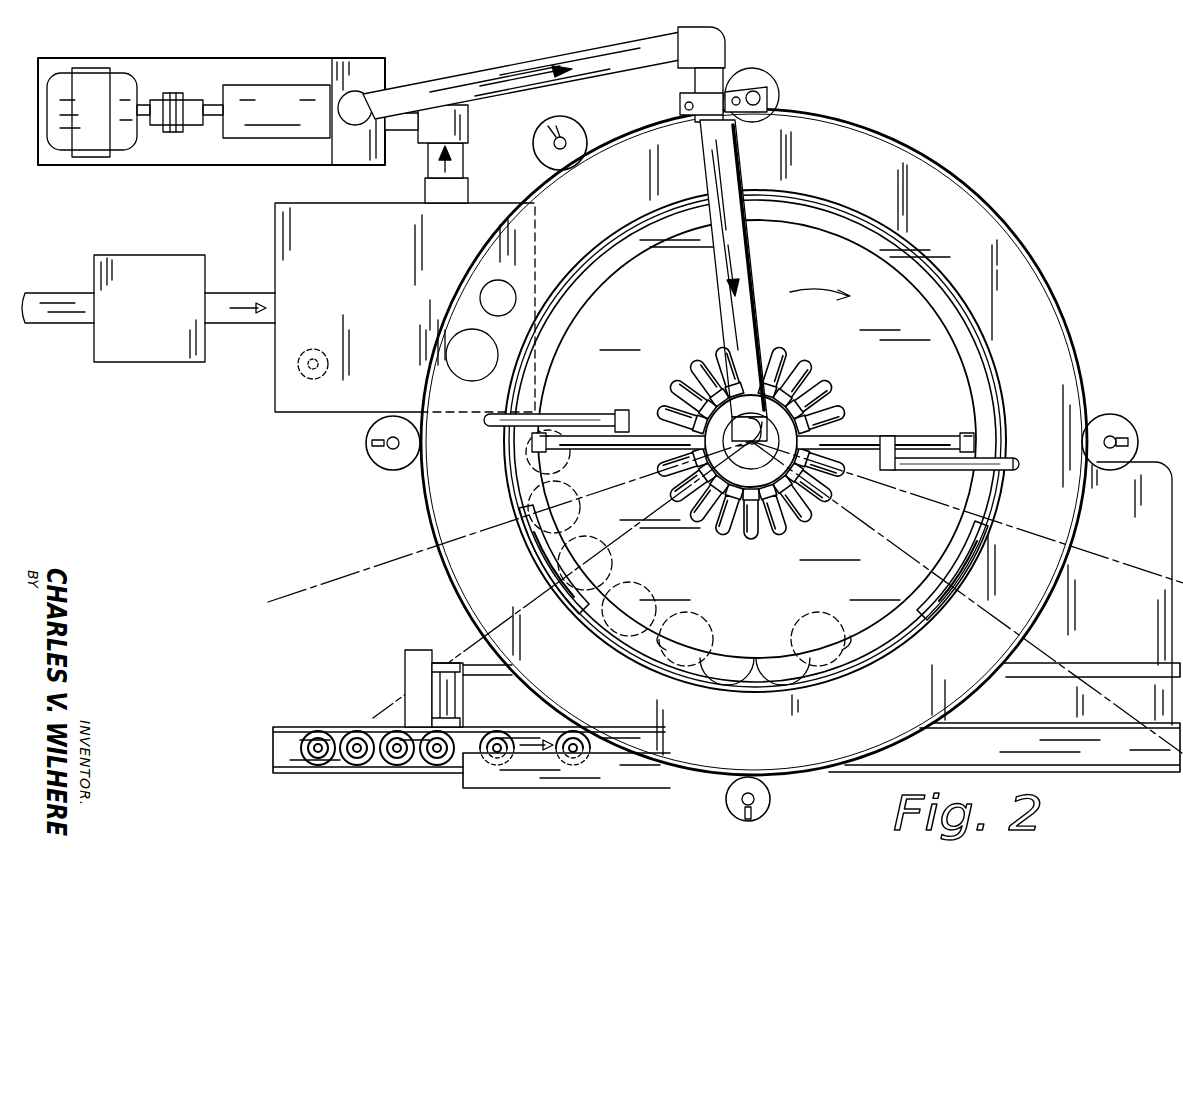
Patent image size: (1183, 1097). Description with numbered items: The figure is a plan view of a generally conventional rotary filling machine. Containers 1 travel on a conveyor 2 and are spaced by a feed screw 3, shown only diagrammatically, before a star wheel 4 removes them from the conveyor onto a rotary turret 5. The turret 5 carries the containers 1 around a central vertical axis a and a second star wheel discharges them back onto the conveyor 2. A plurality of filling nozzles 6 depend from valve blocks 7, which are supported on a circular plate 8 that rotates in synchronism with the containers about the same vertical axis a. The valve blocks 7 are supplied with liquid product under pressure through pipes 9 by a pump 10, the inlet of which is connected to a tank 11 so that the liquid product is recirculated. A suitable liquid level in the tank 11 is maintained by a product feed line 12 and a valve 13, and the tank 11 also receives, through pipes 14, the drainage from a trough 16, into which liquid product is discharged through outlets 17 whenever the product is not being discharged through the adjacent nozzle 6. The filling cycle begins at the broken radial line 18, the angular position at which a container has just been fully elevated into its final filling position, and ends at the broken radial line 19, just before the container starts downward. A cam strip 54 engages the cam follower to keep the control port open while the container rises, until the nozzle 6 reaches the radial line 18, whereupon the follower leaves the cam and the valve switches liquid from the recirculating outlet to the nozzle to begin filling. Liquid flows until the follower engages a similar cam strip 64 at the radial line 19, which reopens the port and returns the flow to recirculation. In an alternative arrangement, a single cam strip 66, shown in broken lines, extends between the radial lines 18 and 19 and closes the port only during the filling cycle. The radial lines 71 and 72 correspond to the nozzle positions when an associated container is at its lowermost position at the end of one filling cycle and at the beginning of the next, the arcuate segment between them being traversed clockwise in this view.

The containers 1 is at (382, 766).
The conveyor 2 is at (282, 748).
The feed screw 3 is at (563, 778).
The star wheel 4 is at (833, 669).
The rotary turret 5 is at (818, 393).
The filling nozzles 6 is at (951, 438).
The valve blocks 7 is at (911, 434).
The circular plate 8 is at (756, 589).
The pipes 9 is at (852, 440).
The pump 10 is at (287, 122).
The tank 11 is at (398, 314).
The product feed line 12 is at (60, 323).
The valve 13 is at (156, 322).
The pipes 14 is at (478, 330).
The trough 16 is at (634, 190).
The outlets 17 is at (1015, 462).
The radial line 18 is at (376, 562).
The radial line 19 is at (1142, 558).
The cam strip 54 is at (540, 565).
The cam strip 64 is at (958, 565).
The single cam strip 66 is at (940, 270).
The radial line 71 is at (1074, 685).
The radial line 72 is at (482, 641).
The central vertical axis a is at (749, 441).